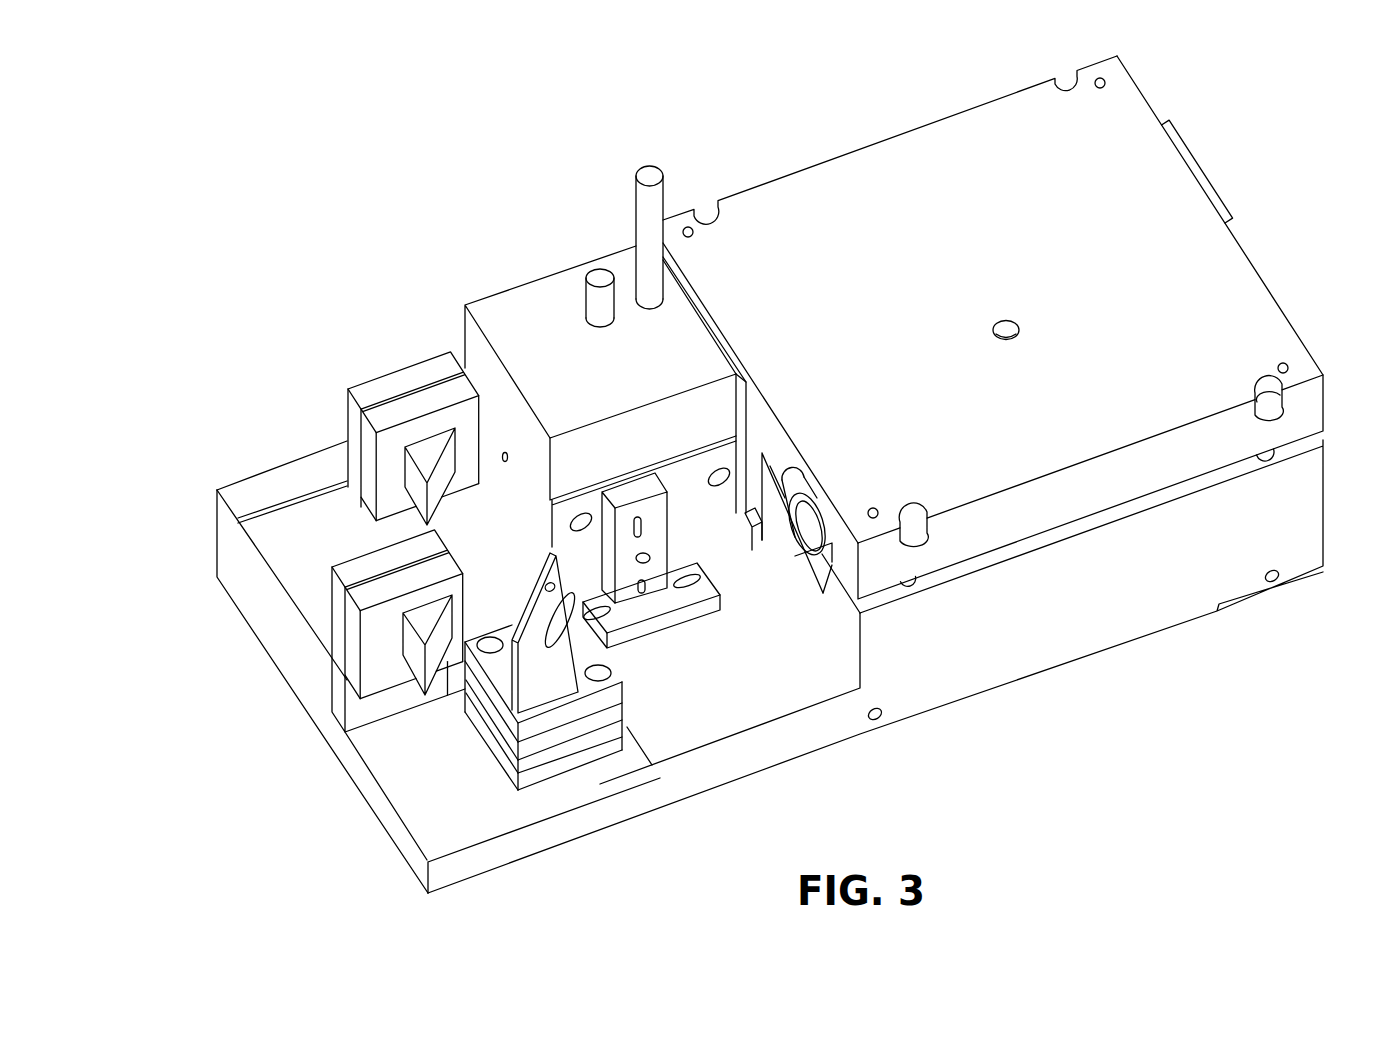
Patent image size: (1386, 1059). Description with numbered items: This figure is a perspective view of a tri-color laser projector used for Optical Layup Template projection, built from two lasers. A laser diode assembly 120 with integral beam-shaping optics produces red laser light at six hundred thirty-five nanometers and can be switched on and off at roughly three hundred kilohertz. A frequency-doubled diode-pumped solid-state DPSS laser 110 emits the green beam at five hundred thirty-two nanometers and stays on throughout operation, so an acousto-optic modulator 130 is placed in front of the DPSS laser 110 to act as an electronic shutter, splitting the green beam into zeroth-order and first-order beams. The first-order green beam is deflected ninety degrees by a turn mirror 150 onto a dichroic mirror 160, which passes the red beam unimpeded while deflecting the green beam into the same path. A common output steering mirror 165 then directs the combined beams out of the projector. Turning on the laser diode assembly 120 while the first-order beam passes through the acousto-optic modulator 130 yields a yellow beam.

The DPSS laser 110 is at (1207, 177).
The laser diode assembly 120 is at (806, 531).
The acousto-optic modulator 130 is at (557, 283).
The turn mirror 150 is at (374, 456).
The dichroic mirror 160 is at (512, 698).
The common output steering mirror 165 is at (409, 640).